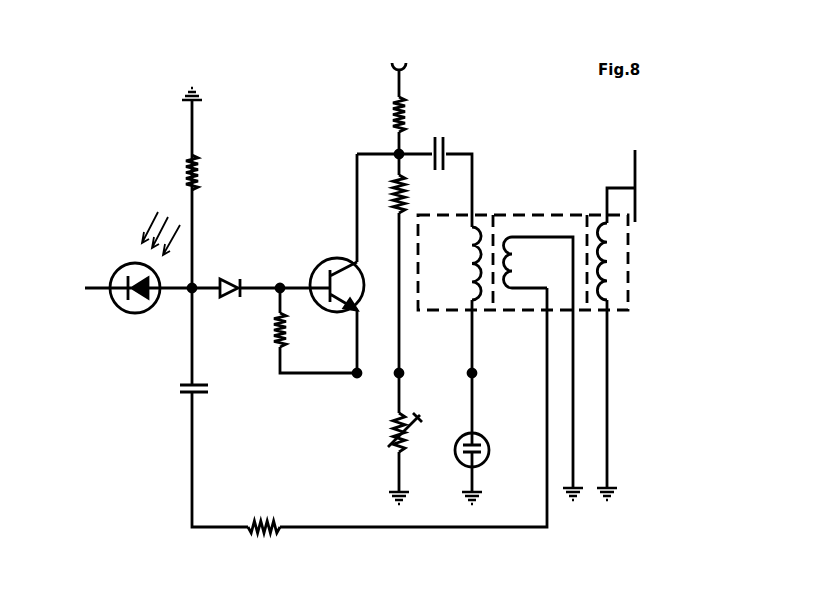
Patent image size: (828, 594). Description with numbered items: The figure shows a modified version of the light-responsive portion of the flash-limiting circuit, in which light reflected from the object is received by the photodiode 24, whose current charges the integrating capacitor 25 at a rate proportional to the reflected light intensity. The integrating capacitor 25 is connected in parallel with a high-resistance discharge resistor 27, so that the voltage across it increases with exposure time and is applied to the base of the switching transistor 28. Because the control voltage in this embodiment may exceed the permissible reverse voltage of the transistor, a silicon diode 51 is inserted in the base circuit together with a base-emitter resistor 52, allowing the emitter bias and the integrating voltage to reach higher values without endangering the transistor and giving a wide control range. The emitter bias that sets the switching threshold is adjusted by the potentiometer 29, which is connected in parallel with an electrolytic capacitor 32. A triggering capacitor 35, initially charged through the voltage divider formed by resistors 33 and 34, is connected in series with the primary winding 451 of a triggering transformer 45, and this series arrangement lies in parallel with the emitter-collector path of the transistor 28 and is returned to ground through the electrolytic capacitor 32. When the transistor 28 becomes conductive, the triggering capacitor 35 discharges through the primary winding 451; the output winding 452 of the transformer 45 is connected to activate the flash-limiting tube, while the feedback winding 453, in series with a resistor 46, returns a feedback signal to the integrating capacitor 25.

The photodiode 24 is at (124, 272).
The integrating capacitor 25 is at (180, 400).
The discharge resistor 27 is at (210, 190).
The switching transistor 28 is at (318, 264).
The potentiometer 29 is at (390, 452).
The electrolytic capacitor 32 is at (484, 442).
The resistor 33 is at (407, 174).
The resistor 34 is at (390, 130).
The triggering capacitor 35 is at (431, 138).
The triggering transformer 45 is at (516, 214).
The resistor 46 is at (252, 534).
The silicon diode 51 is at (231, 277).
The base-emitter resistor 52 is at (298, 348).
The primary winding 451 is at (466, 278).
The output winding 452 is at (602, 274).
The feedback winding 453 is at (514, 274).